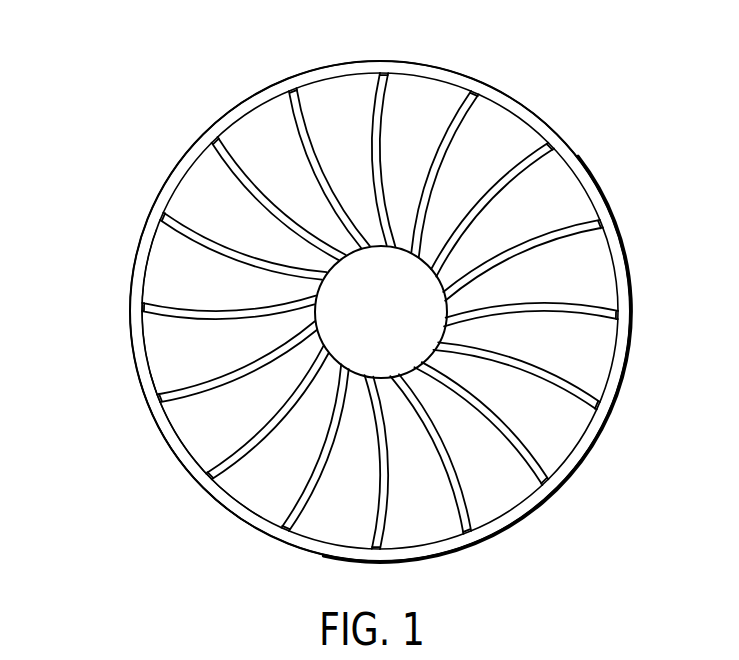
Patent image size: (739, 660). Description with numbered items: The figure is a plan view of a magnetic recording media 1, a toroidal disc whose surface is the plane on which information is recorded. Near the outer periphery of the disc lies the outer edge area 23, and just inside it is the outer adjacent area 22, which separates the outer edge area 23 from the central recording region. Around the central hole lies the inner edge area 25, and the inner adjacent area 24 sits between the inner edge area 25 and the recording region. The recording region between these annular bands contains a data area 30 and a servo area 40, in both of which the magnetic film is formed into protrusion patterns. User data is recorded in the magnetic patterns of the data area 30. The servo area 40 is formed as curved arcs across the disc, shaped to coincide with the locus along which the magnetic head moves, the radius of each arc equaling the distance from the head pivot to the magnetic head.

The magnetic recording media 1 is at (222, 114).
The outer adjacent area 22 is at (142, 267).
The outer edge area 23 is at (149, 311).
The inner adjacent area 24 is at (186, 463).
The inner edge area 25 is at (205, 445).
The data area 30 is at (503, 130).
The servo area 40 is at (459, 106).